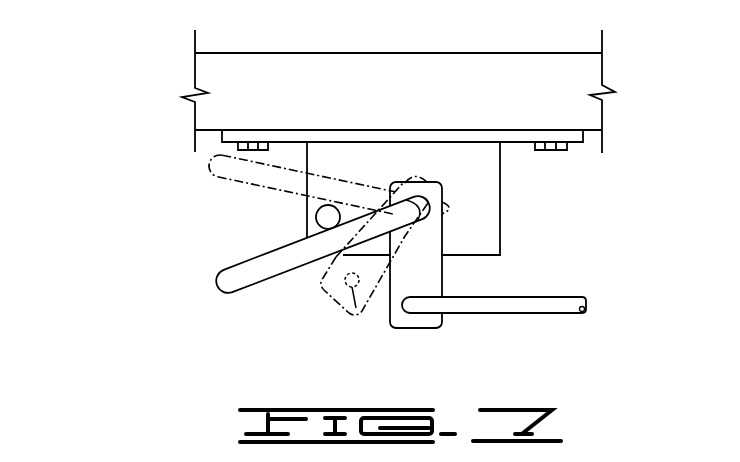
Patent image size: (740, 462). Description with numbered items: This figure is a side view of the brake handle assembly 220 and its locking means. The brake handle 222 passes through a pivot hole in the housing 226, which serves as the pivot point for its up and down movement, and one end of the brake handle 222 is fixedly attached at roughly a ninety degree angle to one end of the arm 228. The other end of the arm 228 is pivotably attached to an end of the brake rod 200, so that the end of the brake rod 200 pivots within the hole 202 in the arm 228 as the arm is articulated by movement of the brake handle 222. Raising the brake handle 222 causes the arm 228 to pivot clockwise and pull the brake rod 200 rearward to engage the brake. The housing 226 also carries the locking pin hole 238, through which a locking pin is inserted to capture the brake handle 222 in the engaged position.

The brake rod 200 is at (555, 295).
The hole 202 is at (355, 315).
The brake handle assembly 220 is at (242, 263).
The brake handle 222 is at (222, 283).
The housing 226 is at (485, 173).
The arm 228 is at (325, 300).
The locking pin hole 238 is at (322, 218).